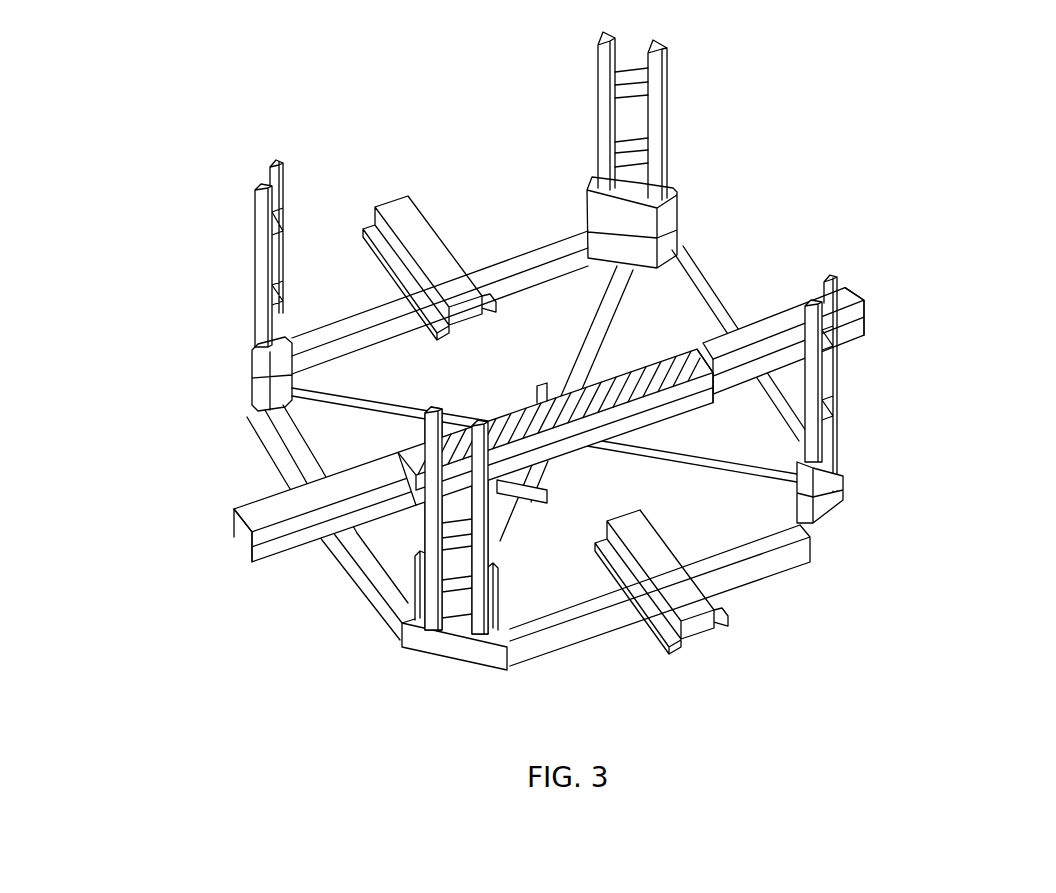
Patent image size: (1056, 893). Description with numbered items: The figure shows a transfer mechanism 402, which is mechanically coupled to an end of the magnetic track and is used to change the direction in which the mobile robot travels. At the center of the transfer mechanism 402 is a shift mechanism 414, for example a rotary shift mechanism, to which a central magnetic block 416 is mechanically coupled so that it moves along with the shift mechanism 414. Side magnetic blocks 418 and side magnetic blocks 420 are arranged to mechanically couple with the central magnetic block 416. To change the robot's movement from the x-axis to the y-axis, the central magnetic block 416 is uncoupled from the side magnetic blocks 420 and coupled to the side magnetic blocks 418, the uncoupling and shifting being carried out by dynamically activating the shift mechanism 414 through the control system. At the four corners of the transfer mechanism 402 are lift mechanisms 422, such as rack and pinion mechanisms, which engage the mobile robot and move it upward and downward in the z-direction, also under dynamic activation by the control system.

The transfer mechanism 402 is at (886, 94).
The shift mechanism 414 is at (540, 478).
The central magnetic block 416 is at (548, 405).
The side magnetic blocks 418 is at (402, 217).
The side magnetic blocks 420 is at (232, 522).
The lift mechanisms 422 is at (258, 258).